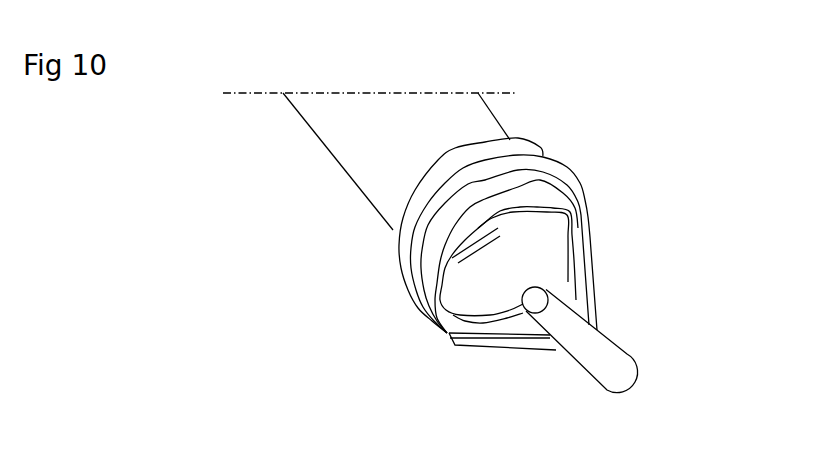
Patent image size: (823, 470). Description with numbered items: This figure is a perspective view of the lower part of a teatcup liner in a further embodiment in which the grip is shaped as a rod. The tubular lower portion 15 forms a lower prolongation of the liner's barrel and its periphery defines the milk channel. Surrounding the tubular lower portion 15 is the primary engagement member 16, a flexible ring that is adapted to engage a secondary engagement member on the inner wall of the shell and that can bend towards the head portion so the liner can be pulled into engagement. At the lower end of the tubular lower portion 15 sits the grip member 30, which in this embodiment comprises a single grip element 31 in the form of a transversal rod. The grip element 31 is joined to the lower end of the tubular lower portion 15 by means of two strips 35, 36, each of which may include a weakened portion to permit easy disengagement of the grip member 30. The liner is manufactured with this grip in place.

The tubular lower portion 15 is at (430, 283).
The primary engagement member 16 is at (543, 157).
The grip member 30 is at (617, 286).
The grip element 31 is at (597, 350).
The strip 35 is at (583, 255).
The strip 36 is at (518, 345).